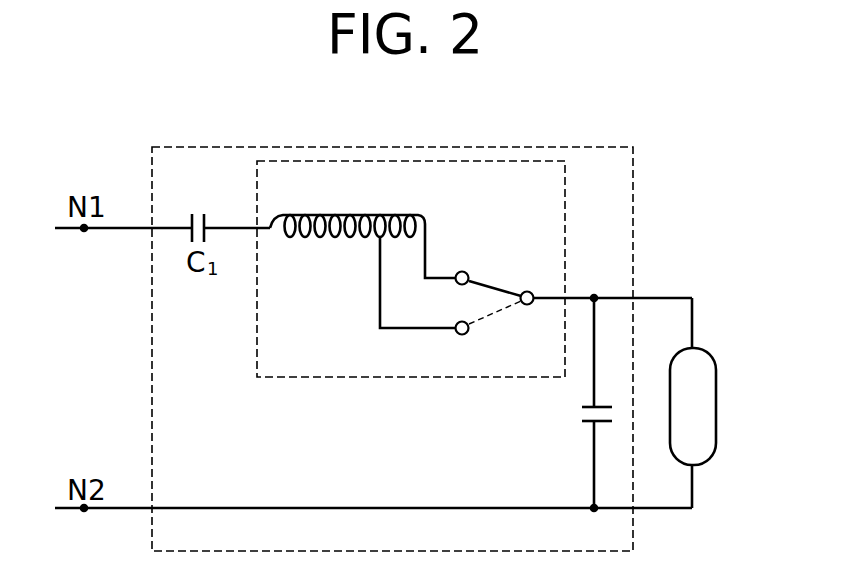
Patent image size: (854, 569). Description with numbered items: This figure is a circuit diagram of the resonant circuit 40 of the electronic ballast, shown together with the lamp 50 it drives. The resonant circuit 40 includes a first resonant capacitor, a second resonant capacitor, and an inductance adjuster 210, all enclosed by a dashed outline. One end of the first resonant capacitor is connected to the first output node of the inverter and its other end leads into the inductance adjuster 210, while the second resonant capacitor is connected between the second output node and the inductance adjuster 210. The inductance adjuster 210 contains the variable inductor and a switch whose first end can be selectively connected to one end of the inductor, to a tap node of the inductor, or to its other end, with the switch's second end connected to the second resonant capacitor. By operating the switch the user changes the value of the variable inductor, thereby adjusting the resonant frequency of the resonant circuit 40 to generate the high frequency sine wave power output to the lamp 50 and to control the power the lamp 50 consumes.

The inductance adjuster 210 is at (520, 161).
The resonant circuit 40 is at (612, 147).
The lamp 50 is at (709, 353).